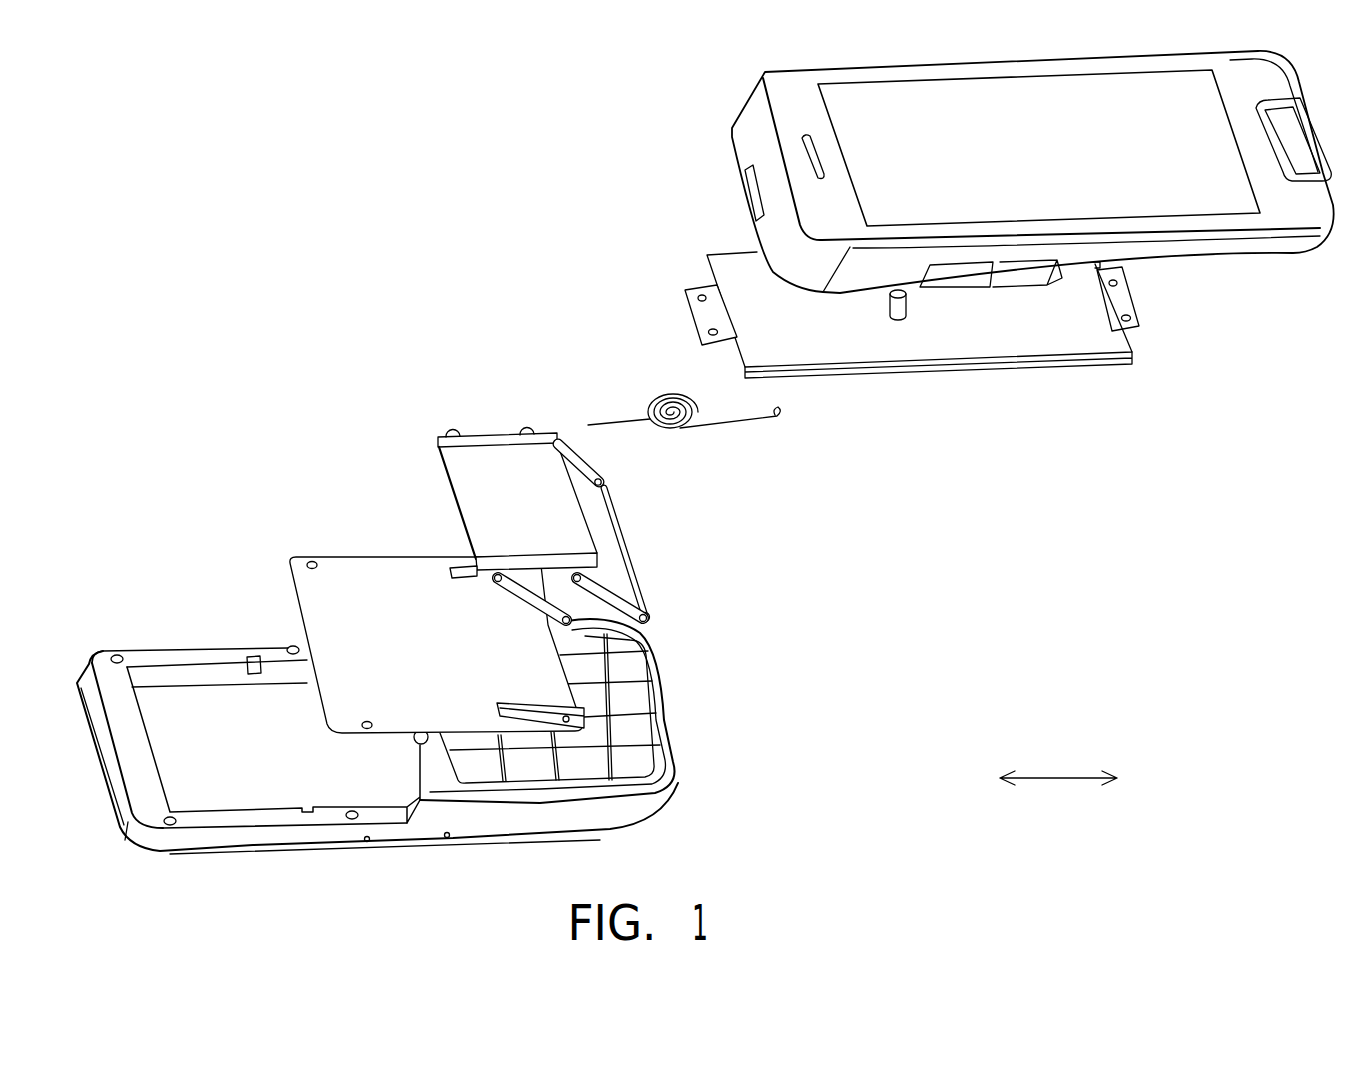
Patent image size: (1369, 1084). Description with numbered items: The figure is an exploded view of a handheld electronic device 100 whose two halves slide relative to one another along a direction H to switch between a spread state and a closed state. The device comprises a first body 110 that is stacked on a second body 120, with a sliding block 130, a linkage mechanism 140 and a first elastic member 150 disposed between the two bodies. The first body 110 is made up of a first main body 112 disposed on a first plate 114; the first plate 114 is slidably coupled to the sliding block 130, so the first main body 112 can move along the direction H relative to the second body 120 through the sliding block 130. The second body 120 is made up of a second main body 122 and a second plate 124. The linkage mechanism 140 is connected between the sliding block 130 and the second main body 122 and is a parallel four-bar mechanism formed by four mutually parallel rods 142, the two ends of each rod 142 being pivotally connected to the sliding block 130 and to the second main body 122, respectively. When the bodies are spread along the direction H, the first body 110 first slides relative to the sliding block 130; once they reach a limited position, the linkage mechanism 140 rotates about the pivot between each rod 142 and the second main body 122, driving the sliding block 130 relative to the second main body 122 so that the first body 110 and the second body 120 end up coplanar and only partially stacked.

The handheld electronic device 100 is at (705, 505).
The first body 110 is at (1009, 280).
The first main body 112 is at (1166, 197).
The first plate 114 is at (1068, 337).
The second body 120 is at (377, 758).
The second main body 122 is at (293, 778).
The second plate 124 is at (387, 715).
The sliding block 130 is at (578, 540).
The linkage mechanism 140 is at (506, 461).
The rod 142 is at (495, 568).
The first elastic member 150 is at (793, 415).